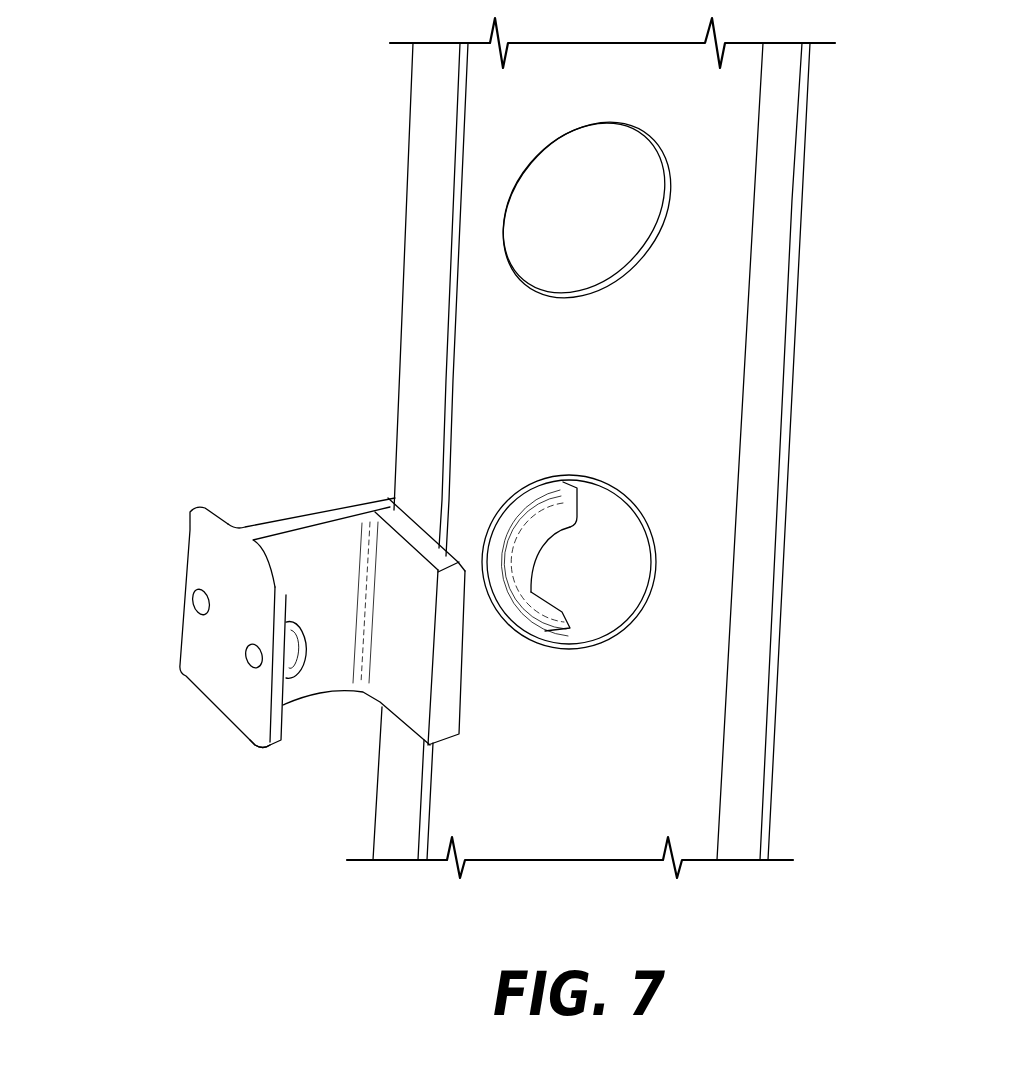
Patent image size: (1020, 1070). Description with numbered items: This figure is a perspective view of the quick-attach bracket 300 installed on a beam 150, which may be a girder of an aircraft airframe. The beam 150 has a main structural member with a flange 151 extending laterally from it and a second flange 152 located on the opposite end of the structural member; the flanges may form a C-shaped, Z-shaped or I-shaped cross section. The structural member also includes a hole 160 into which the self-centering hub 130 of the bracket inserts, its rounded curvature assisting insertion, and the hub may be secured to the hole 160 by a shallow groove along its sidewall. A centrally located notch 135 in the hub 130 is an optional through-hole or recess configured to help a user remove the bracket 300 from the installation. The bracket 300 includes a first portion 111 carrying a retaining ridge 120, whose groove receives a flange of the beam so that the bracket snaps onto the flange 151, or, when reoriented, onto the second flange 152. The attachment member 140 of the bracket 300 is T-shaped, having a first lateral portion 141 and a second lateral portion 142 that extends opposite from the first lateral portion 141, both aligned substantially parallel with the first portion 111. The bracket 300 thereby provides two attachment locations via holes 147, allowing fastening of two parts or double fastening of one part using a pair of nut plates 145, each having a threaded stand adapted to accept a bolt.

The beam 150 is at (291, 105).
The flange 151 is at (420, 323).
The second flange 152 is at (800, 281).
The hole 160 is at (636, 535).
The self-centering hub 130 is at (570, 500).
The notch 135 is at (586, 589).
The quick-attach bracket 300 is at (136, 529).
The attachment member 140 is at (285, 520).
The second lateral portion 142 is at (193, 672).
The first lateral portion 141 is at (257, 742).
The hole 147 is at (190, 604).
The nut plate 145 is at (297, 697).
The first portion 111 is at (407, 716).
The retaining ridge 120 is at (452, 697).